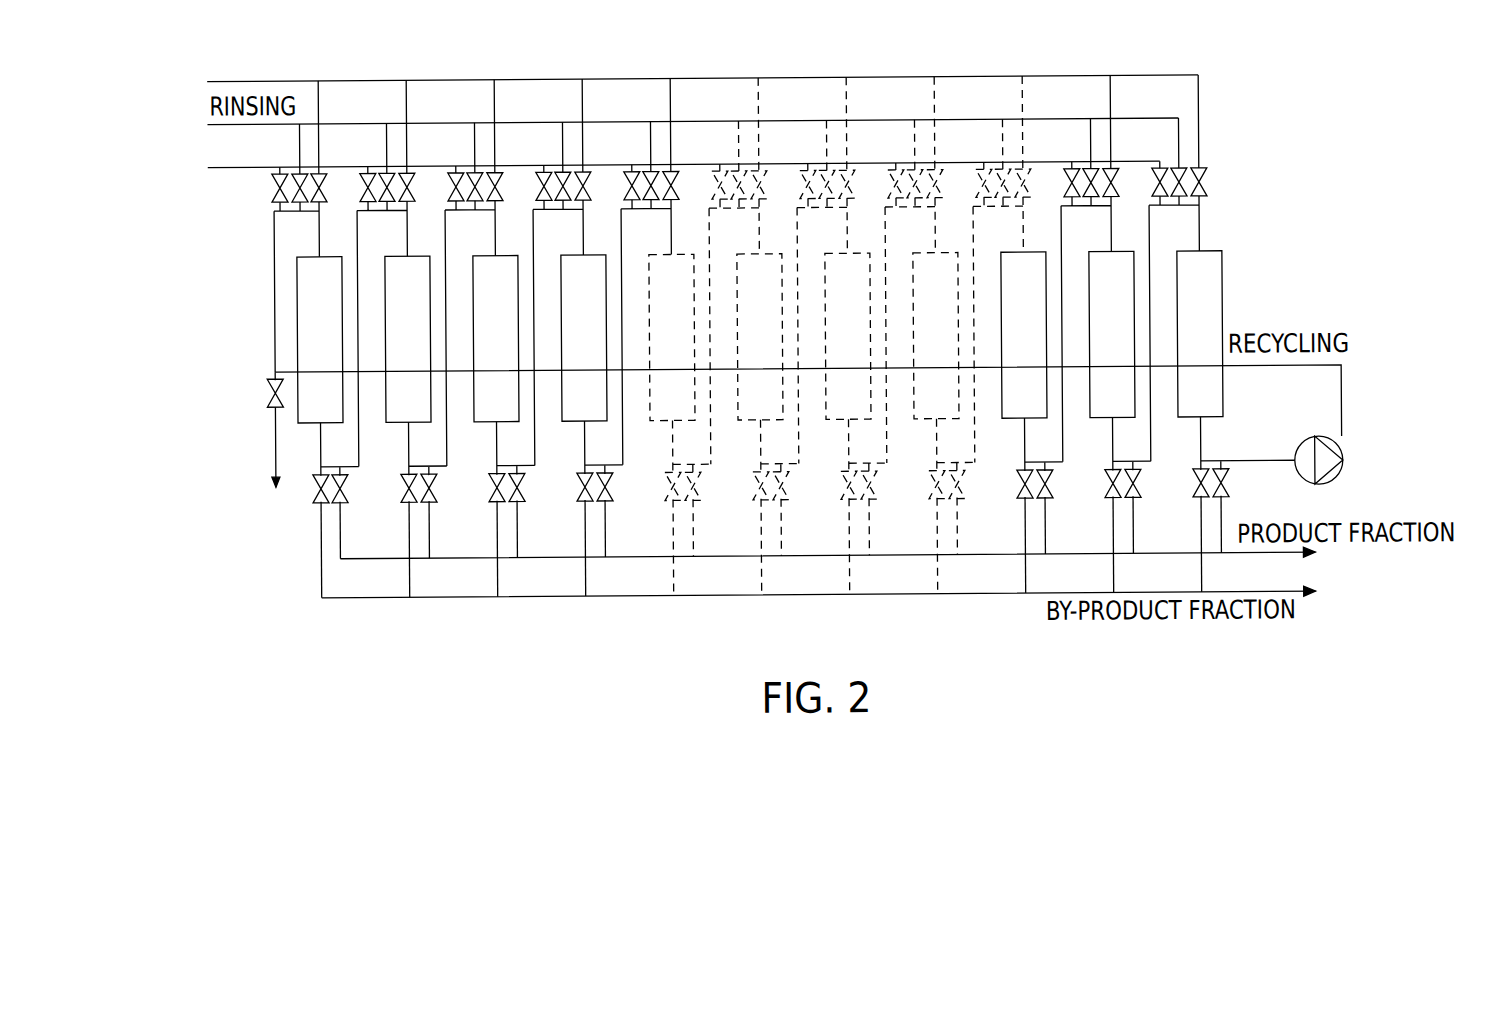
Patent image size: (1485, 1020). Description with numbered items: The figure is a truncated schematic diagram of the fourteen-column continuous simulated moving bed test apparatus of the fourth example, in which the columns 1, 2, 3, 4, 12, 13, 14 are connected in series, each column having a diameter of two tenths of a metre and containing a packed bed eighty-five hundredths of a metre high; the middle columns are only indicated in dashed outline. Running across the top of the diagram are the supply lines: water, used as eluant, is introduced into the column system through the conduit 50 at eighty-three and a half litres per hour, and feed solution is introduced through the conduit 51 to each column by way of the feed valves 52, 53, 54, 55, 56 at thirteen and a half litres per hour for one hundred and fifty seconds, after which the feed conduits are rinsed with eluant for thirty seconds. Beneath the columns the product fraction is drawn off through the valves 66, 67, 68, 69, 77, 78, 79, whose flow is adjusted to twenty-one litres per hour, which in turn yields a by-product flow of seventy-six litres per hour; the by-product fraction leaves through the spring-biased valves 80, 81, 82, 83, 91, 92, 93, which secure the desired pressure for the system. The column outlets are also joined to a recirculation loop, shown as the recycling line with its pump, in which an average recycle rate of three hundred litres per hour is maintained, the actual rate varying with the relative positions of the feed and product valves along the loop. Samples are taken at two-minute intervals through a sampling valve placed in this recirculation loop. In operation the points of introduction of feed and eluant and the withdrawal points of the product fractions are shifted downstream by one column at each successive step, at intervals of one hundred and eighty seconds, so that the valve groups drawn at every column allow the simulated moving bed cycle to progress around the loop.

The column 1 is at (309, 357).
The column 2 is at (397, 357).
The column 3 is at (485, 357).
The column 4 is at (573, 357).
The column 12 is at (1009, 357).
The column 13 is at (1097, 357).
The column 14 is at (1185, 357).
The conduit 50 is at (384, 80).
The conduit 51 is at (241, 168).
The feed valve 52 is at (272, 190).
The feed valve 53 is at (362, 188).
The feed valve 54 is at (449, 188).
The feed valve 55 is at (538, 188).
The feed valve 56 is at (627, 188).
The product fraction valve 66 is at (343, 489).
The product fraction valve 67 is at (431, 489).
The product fraction valve 68 is at (519, 489).
The product fraction valve 69 is at (608, 489).
The product fraction valve 77 is at (1051, 496).
The product fraction valve 78 is at (1140, 496).
The product fraction valve 79 is at (1229, 496).
The spring-biased valve 80 is at (270, 452).
The spring-biased valve 81 is at (403, 492).
The spring-biased valve 82 is at (491, 492).
The spring-biased valve 83 is at (579, 492).
The spring-biased valve 91 is at (1016, 493).
The spring-biased valve 92 is at (1104, 494).
The spring-biased valve 93 is at (1191, 494).